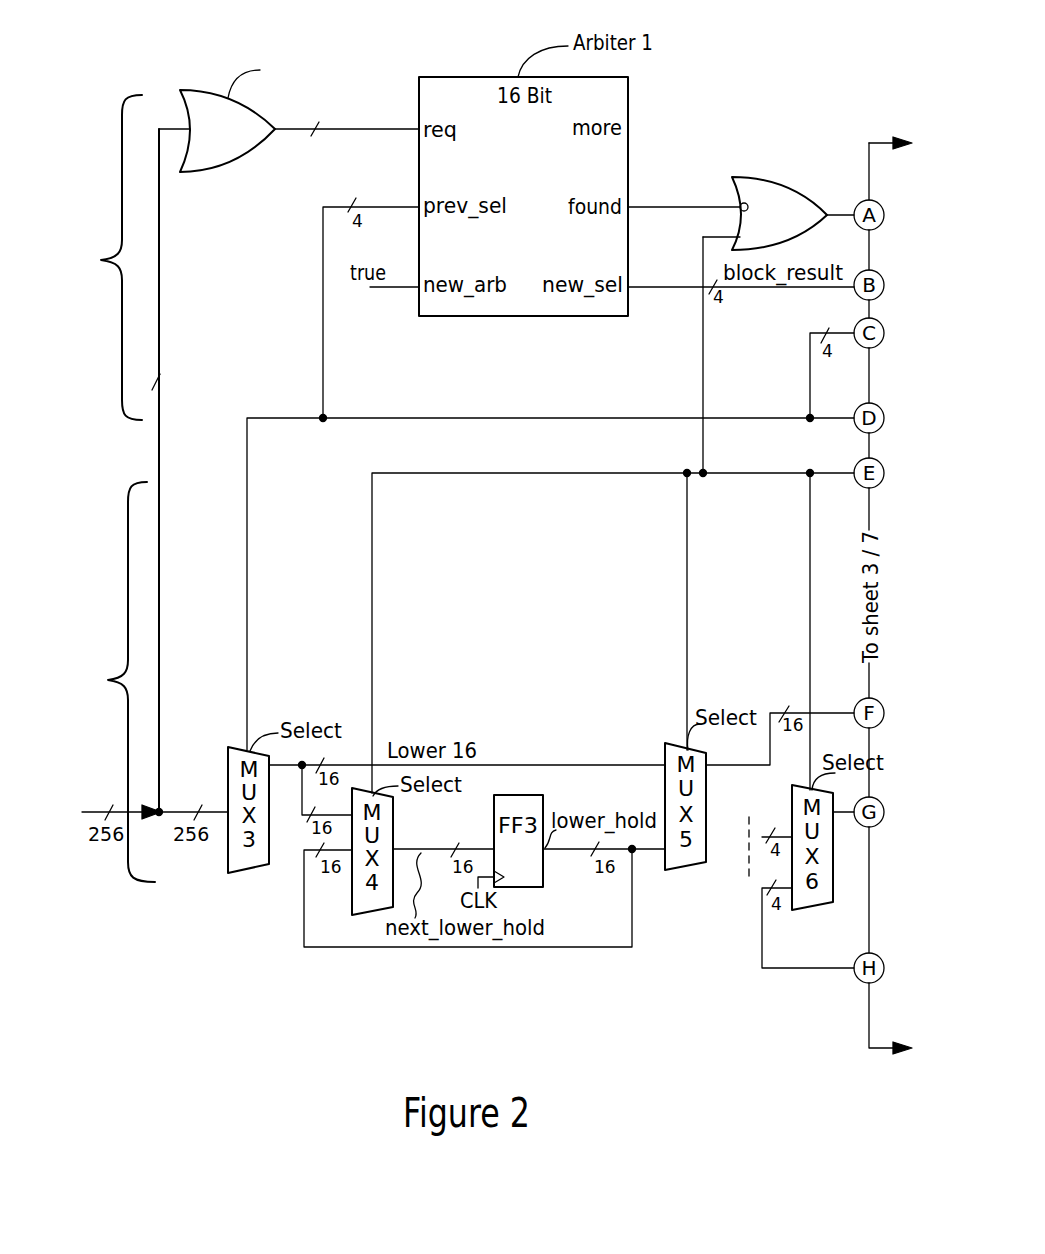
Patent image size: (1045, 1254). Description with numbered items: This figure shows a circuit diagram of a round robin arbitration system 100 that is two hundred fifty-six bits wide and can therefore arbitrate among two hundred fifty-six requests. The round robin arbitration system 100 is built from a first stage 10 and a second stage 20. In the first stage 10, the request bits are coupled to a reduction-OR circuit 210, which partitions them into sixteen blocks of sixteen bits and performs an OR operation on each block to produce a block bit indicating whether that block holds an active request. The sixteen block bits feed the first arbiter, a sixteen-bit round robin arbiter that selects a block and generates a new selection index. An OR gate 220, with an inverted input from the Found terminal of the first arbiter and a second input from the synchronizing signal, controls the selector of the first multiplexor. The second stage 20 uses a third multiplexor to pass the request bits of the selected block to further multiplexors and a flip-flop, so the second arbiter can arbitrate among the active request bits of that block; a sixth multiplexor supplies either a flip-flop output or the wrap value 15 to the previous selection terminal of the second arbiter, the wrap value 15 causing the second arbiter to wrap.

The round robin arbitration system 100 is at (100, 96).
The first stage 10 is at (122, 360).
The second stage 20 is at (128, 596).
The reduction-OR circuit 210 is at (198, 92).
The OR gate 220 is at (758, 178).
The wrap value 15 is at (753, 835).